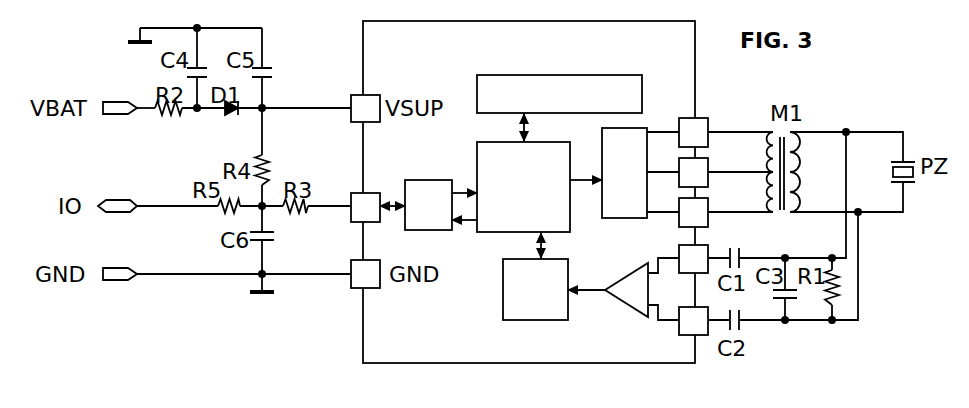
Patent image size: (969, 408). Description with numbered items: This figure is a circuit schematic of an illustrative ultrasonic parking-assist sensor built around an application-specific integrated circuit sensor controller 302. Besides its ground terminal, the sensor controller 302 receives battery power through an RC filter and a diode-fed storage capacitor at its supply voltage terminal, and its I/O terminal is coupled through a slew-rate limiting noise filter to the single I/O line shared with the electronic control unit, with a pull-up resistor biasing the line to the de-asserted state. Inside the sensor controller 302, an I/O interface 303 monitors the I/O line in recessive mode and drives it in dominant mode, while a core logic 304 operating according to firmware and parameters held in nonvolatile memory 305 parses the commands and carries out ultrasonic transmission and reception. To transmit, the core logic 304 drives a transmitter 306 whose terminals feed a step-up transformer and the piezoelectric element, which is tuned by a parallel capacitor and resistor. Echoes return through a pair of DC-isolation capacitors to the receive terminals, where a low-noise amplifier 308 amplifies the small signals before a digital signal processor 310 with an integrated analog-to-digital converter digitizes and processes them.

The sensor controller 302 is at (412, 364).
The I/O interface 303 is at (420, 181).
The core logic 304 is at (477, 175).
The nonvolatile memory 305 is at (477, 92).
The transmitter 306 is at (630, 220).
The low-noise amplifier 308 is at (630, 308).
The digital signal processor 310 is at (503, 310).